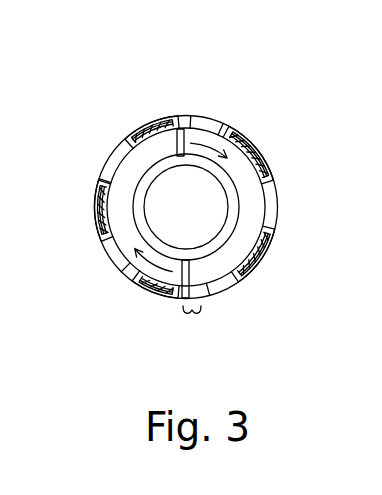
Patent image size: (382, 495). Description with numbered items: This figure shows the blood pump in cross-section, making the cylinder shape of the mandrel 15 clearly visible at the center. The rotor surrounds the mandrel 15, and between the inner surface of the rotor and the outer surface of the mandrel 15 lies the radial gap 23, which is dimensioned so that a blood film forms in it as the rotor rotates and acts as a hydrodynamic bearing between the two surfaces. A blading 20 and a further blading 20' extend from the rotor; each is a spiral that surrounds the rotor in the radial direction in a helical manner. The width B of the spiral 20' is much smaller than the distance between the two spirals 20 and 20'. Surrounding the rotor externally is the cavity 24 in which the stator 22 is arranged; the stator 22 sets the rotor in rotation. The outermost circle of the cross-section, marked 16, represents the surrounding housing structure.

The mandrel 15 is at (186, 207).
The housing 16 is at (137, 169).
The blading 20 is at (208, 102).
The further blading 20' is at (242, 296).
The stator 22 is at (155, 126).
The radial gap 23 is at (232, 212).
The cavity 24 is at (234, 129).
The width of the spiral B is at (191, 328).